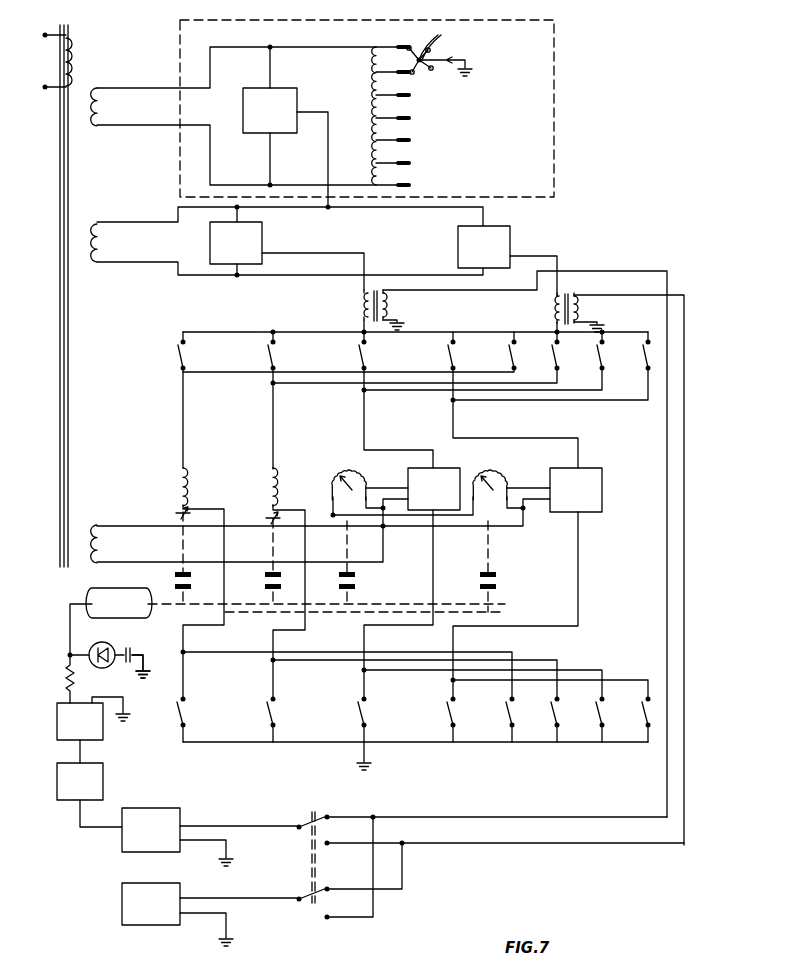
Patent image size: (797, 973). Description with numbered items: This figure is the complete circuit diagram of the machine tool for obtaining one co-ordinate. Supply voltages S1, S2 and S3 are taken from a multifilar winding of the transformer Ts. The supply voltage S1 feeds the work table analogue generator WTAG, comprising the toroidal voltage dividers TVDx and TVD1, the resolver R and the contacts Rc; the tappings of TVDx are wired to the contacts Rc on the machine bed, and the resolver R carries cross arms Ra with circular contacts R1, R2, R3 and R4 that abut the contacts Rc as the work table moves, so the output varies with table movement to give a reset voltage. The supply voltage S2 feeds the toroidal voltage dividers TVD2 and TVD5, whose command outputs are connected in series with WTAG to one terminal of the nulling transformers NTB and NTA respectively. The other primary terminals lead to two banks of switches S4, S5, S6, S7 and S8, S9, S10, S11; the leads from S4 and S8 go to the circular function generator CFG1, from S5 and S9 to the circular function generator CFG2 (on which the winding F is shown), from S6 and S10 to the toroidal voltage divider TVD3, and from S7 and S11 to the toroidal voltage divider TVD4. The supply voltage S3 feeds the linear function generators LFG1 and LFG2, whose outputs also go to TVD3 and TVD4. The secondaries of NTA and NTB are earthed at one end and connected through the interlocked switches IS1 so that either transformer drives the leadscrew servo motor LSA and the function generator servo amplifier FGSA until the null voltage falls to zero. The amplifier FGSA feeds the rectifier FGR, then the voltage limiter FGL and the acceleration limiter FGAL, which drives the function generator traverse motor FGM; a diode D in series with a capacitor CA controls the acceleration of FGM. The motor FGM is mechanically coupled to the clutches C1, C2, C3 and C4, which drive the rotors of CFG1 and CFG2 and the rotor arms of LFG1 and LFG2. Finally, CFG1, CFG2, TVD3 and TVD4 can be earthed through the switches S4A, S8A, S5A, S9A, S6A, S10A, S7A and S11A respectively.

The transformer Ts is at (69, 61).
The supply voltage S1 is at (110, 107).
The work table analogue generator WTAG is at (179, 40).
The toroidal voltage divider TVD1 is at (270, 110).
The toroidal voltage divider TVDx is at (364, 105).
The circular contact R1 is at (408, 47).
The cross arms Ra is at (438, 41).
The circular contact R4 is at (431, 50).
The circular contact R2 is at (412, 73).
The circular contact R3 is at (433, 70).
The resolver R is at (469, 60).
The contacts Rc is at (410, 163).
The supply voltage S2 is at (110, 243).
The toroidal voltage divider TVD2 is at (236, 243).
The toroidal voltage divider TVD5 is at (484, 247).
The nulling transformer NTB is at (358, 304).
The nulling transformer NTA is at (553, 307).
The switch S4 is at (171, 352).
The switch S5 is at (261, 352).
The switch S6 is at (352, 352).
The switch S7 is at (441, 352).
The switch S8 is at (503, 352).
The switch S9 is at (546, 352).
The switch S10 is at (590, 352).
The switch S11 is at (636, 352).
The circular function generator CFG1 is at (161, 493).
The circular function generator CFG2 is at (253, 487).
The winding F.F. F is at (277, 490).
The linear function generator LFG1 is at (342, 474).
The linear function generator LFG2 is at (497, 474).
The toroidal voltage divider TVD3 is at (434, 489).
The toroidal voltage divider TVD4 is at (576, 490).
The supply voltage S3 is at (110, 544).
The clutch C1 is at (193, 584).
The clutch C2 is at (283, 584).
The clutch C3 is at (357, 584).
The clutch C4 is at (498, 584).
The function generator traverse motor FGM is at (119, 603).
The diode D is at (102, 646).
The acceleration limiter FGAL is at (149, 657).
The capacitor CA is at (124, 660).
The voltage limiter FGL is at (95, 723).
The rectifier FGR is at (96, 781).
The switch S4A is at (195, 720).
The switch S5A is at (285, 720).
The switch S6A is at (376, 720).
The switch S7A is at (465, 720).
The switch S8A is at (523, 720).
The switch S9A is at (568, 720).
The switch S10A is at (615, 720).
The switch S11A is at (640, 716).
The function generator servo amplifier FGSA is at (151, 830).
The interlocked switches IS1 is at (483, 866).
The leadscrew servo motor LSA is at (151, 904).